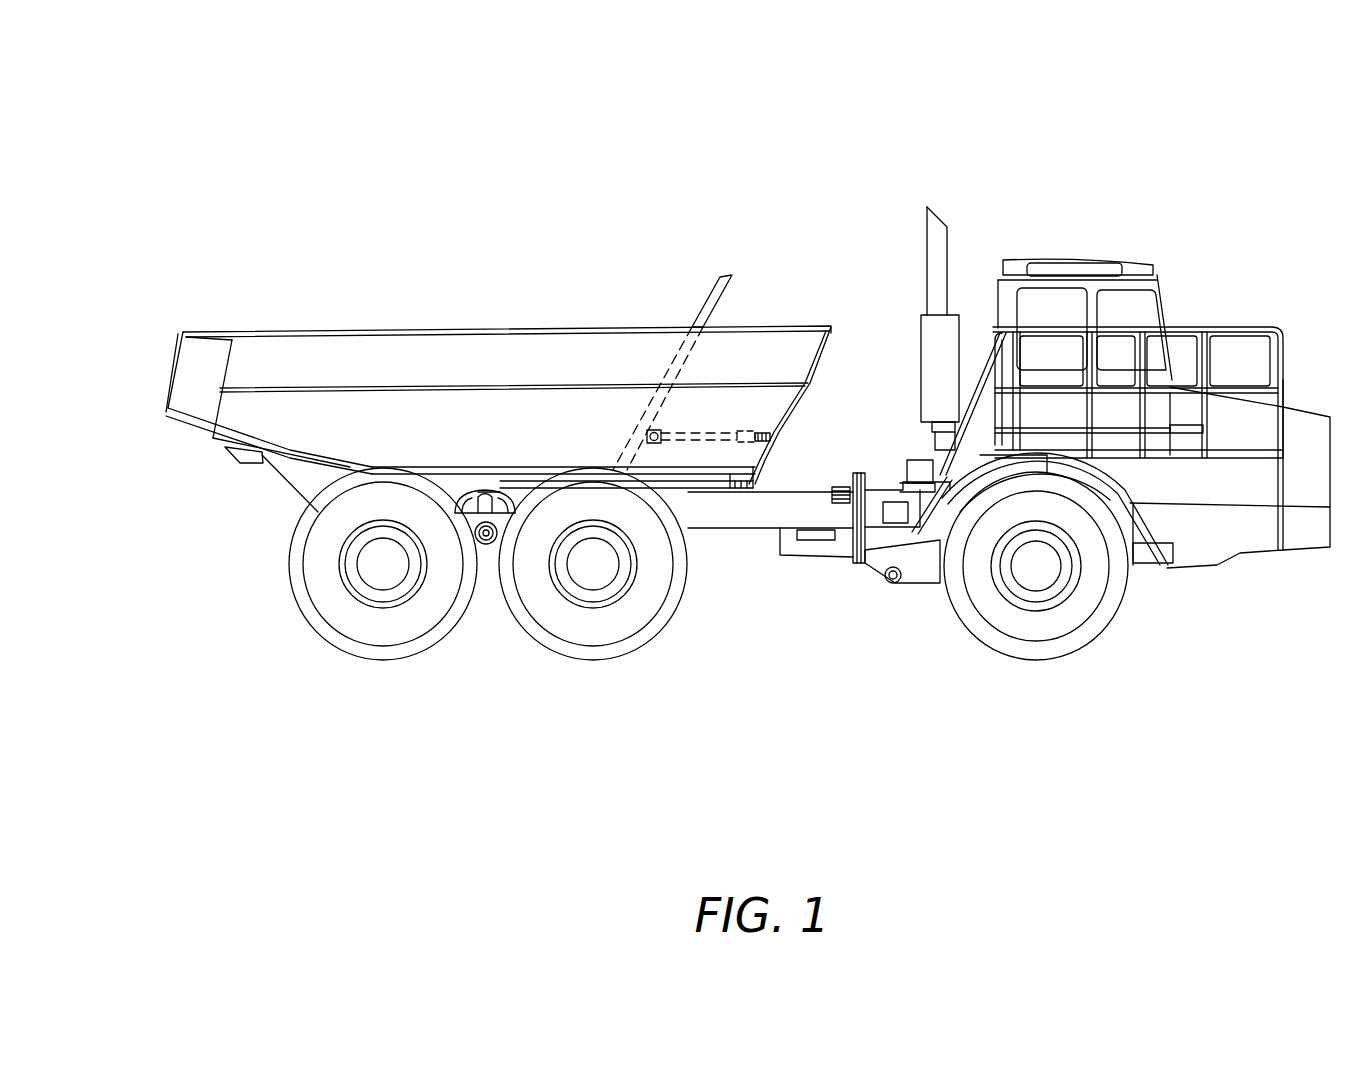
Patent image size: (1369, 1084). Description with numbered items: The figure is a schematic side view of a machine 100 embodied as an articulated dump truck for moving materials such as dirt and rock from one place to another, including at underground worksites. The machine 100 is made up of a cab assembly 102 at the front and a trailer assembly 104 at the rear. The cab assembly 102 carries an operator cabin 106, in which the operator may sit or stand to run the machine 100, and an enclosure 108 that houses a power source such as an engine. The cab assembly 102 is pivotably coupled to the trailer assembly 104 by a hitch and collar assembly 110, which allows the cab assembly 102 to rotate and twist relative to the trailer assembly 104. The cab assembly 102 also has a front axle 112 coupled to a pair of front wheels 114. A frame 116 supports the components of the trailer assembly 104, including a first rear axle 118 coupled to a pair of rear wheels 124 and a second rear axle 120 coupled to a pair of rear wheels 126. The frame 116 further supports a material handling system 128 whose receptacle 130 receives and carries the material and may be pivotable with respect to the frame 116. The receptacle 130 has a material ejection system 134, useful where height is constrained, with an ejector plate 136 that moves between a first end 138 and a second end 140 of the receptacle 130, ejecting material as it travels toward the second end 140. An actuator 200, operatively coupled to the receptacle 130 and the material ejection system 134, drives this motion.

The machine 100 is at (1141, 126).
The cab assembly 102 is at (1163, 246).
The trailer assembly 104 is at (195, 484).
The operator cabin 106 is at (1156, 308).
The enclosure 108 is at (1305, 490).
The hitch and collar assembly 110 is at (862, 564).
The front axle 112 is at (1037, 568).
The front wheels 114 is at (1030, 660).
The frame 116 is at (708, 518).
The first rear axle 118 is at (383, 575).
The second rear axle 120 is at (593, 575).
The rear wheels 124 is at (383, 662).
The rear wheels 126 is at (593, 662).
The material handling system 128 is at (473, 301).
The receptacle 130 is at (176, 367).
The material ejection system 134 is at (737, 252).
The ejector plate 136 is at (707, 303).
The first end 138 is at (839, 370).
The second end 140 is at (194, 295).
The actuator 200 is at (726, 406).